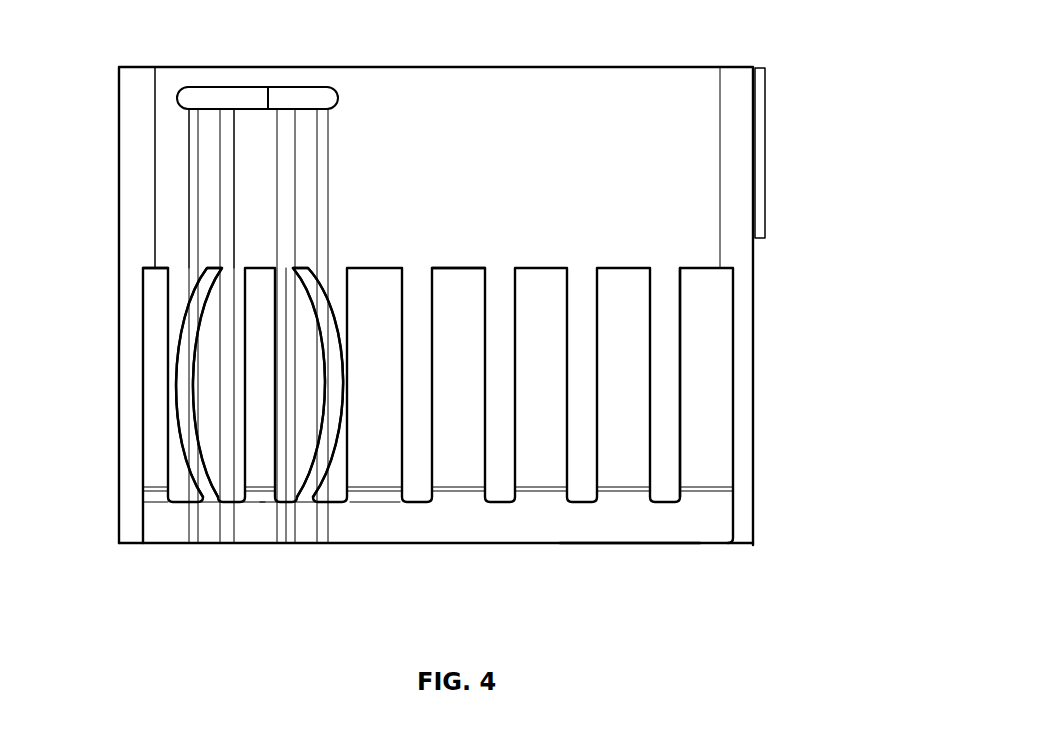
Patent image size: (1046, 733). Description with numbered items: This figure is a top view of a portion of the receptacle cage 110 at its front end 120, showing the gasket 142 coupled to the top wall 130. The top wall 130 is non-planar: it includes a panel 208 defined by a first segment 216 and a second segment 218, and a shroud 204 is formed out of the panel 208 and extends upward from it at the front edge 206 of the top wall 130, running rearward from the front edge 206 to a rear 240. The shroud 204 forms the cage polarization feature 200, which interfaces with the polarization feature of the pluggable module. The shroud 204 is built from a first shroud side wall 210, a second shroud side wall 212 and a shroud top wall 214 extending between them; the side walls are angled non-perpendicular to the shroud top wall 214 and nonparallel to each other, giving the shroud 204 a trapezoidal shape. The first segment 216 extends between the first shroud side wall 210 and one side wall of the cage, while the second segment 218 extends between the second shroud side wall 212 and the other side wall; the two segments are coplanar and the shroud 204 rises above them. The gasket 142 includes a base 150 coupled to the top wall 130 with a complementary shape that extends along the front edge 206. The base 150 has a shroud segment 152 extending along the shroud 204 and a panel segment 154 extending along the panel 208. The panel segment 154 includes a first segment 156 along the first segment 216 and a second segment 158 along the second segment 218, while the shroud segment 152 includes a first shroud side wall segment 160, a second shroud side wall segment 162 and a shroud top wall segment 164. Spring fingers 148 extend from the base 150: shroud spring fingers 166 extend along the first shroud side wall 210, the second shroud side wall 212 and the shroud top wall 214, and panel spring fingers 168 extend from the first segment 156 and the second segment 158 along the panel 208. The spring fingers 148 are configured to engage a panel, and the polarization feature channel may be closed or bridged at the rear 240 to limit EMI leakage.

The receptacle cage 110 is at (692, 54).
The front end 120 is at (743, 543).
The top wall 130 is at (677, 180).
The gasket 142 is at (571, 530).
The spring fingers 148 is at (700, 390).
The base 150 is at (455, 523).
The shroud segment 152 is at (253, 528).
The panel segment 154 is at (375, 638).
The first segment 156 is at (160, 530).
The second segment 158 is at (373, 527).
The first shroud side wall segment 160 is at (210, 528).
The second shroud side wall segment 162 is at (307, 528).
The shroud top wall segment 164 is at (268, 528).
The shroud spring fingers 166 is at (325, 322).
The panel spring fingers 168 is at (153, 440).
The cage polarization feature 200 is at (291, 155).
The shroud 204 is at (252, 157).
The front edge 206 is at (630, 543).
The panel 208 is at (662, 455).
The first shroud side wall 210 is at (208, 132).
The second shroud side wall 212 is at (308, 128).
The shroud top wall 214 is at (263, 133).
The first segment 216 is at (168, 208).
The second segment 218 is at (373, 193).
The rear 240 is at (247, 107).